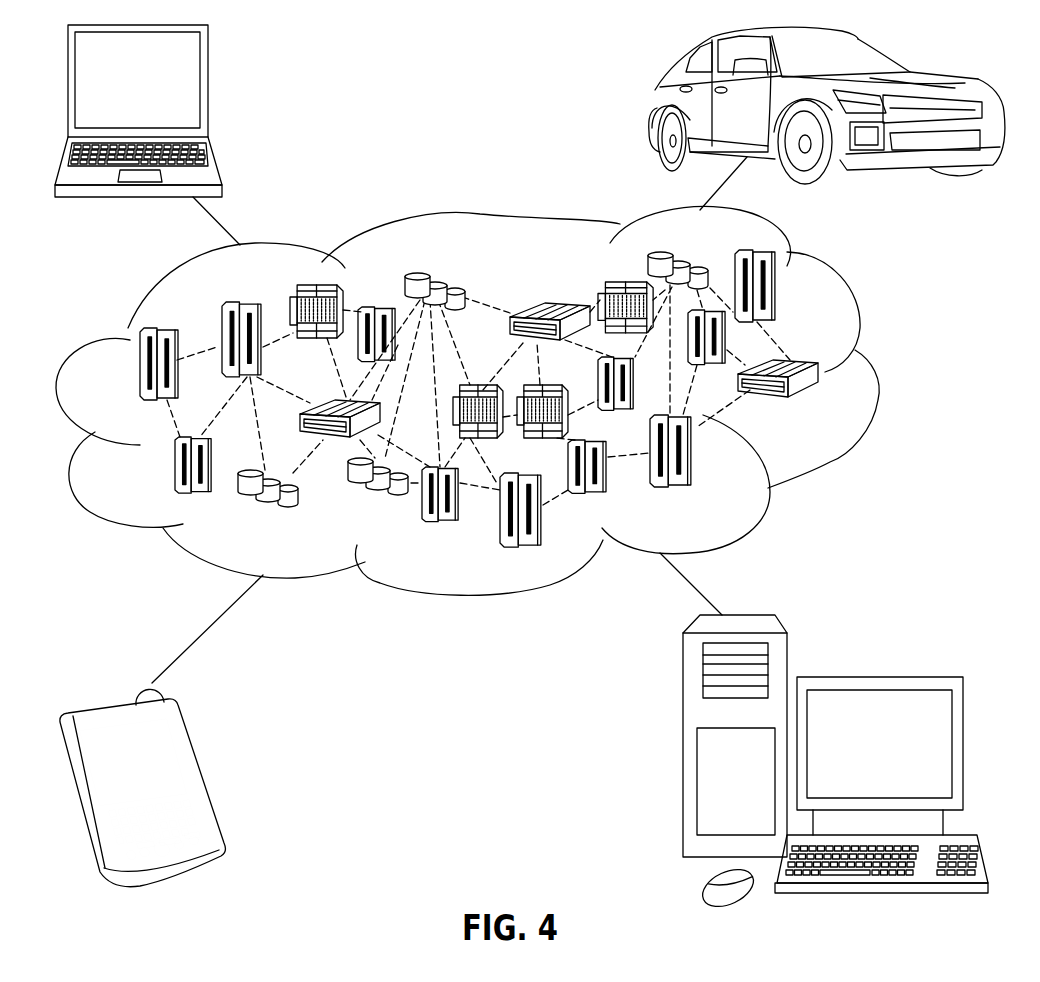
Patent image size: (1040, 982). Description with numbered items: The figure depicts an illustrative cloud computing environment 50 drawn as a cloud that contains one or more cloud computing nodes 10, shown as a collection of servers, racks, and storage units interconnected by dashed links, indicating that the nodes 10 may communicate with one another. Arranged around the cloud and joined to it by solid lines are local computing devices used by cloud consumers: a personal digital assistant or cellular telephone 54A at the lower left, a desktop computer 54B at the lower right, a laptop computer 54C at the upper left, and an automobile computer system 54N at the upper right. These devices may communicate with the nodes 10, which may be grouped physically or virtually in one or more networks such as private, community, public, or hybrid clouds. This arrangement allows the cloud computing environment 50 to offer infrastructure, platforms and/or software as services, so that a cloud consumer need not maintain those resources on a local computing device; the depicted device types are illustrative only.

The cloud computing nodes 10 is at (535, 398).
The cloud computing environment 50 is at (878, 377).
The personal digital assistant (PDA) or cellular telephone 54A is at (198, 775).
The desktop computer 54B is at (875, 675).
The laptop computer 54C is at (210, 88).
The automobile computer system 54N is at (653, 107).